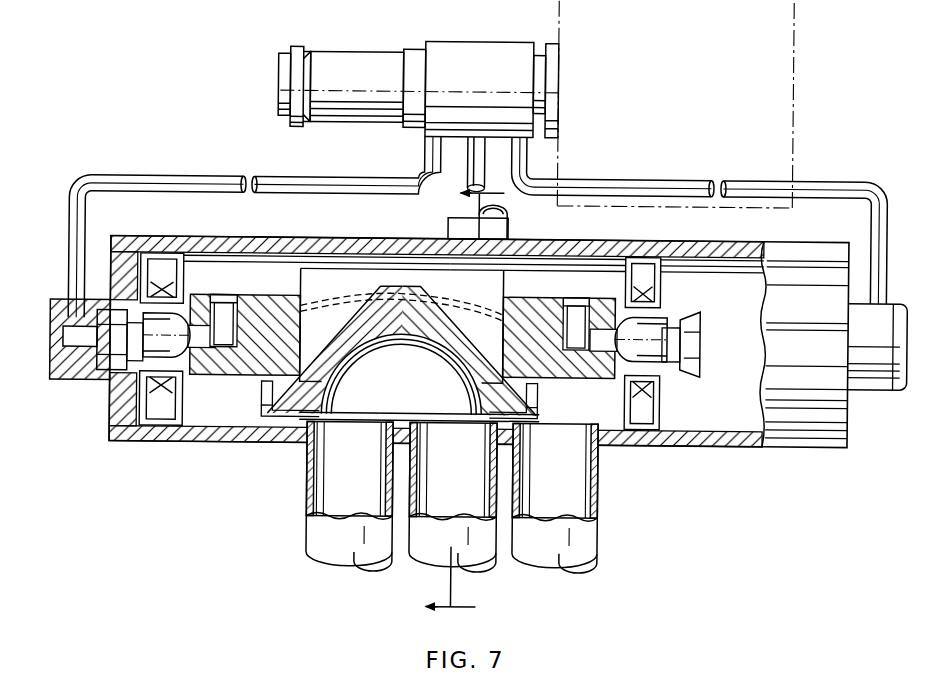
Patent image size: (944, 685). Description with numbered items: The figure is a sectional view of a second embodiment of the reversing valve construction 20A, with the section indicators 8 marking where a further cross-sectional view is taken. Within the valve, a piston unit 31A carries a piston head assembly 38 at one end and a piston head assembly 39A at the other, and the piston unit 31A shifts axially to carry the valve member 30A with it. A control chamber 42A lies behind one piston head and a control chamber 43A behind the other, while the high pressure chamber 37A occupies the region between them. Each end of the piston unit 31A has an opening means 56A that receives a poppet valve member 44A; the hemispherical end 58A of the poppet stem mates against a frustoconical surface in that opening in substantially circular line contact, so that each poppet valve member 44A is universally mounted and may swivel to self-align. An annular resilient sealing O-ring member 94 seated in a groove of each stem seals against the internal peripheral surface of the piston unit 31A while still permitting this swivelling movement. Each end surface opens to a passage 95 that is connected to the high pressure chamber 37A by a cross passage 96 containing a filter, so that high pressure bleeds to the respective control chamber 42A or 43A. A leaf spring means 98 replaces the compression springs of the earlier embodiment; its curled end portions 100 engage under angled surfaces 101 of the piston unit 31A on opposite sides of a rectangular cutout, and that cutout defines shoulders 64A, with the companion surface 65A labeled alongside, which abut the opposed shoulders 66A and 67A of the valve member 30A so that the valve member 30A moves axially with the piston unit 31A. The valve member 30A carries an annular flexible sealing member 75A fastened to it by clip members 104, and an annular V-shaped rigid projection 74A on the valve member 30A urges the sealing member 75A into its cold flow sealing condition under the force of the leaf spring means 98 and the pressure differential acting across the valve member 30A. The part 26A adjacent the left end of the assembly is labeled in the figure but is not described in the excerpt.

The section line 8- 8 is at (456, 401).
The reversing valve construction 20A is at (768, 480).
The housing wall 26A is at (113, 374).
The valve member 30A is at (437, 322).
The piston unit 31A is at (300, 262).
The high pressure chamber 37A is at (594, 266).
The piston head assembly 38 is at (190, 268).
The piston head assembly 39A is at (664, 278).
The control chamber 42A is at (150, 434).
The control chamber 43A is at (743, 415).
The poppet valve member 44A is at (108, 340).
The opening means 56A is at (143, 382).
The hemispherical end 58A is at (205, 352).
The shoulders 64A is at (364, 294).
The flow path 65A is at (515, 272).
The shoulder 66A is at (306, 333).
The shoulder 67A is at (453, 403).
The annular V-shaped rigid projection 74A is at (308, 441).
The annular flexible sealing member 75A is at (300, 436).
The annular resilient sealing O-ring member 94 is at (130, 318).
The passage 95 is at (196, 312).
The cross passage 96 is at (264, 300).
The leaf spring means 98 is at (462, 245).
The curled end portions 100 is at (302, 308).
The angled surfaces 101 is at (247, 377).
The clip members 104 is at (245, 422).